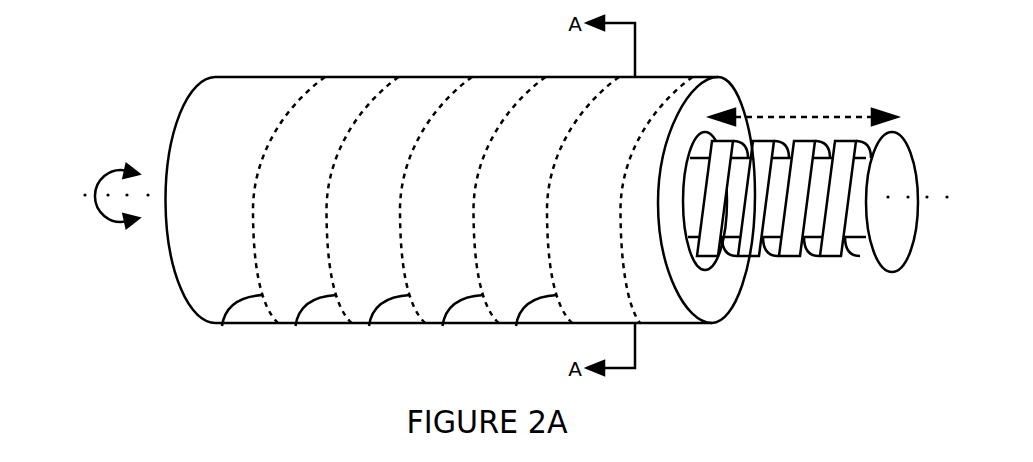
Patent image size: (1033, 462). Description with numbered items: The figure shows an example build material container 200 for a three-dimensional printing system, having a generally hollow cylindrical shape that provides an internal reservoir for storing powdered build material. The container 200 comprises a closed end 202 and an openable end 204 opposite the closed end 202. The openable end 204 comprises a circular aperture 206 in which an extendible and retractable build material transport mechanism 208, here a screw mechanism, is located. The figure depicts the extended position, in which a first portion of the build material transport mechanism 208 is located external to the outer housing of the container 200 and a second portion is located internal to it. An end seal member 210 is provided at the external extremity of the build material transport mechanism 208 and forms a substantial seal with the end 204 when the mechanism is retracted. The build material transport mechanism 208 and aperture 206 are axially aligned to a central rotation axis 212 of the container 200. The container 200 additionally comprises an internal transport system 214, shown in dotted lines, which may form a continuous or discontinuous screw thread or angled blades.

The build material container 200 is at (340, 53).
The closed end 202 is at (170, 147).
The openable end 204 is at (708, 98).
The circular aperture 206 is at (718, 263).
The build material transport mechanism 208 is at (777, 263).
The end seal member 210 is at (873, 263).
The central rotation axis 212 is at (68, 195).
The internal transport system 214 is at (222, 326).